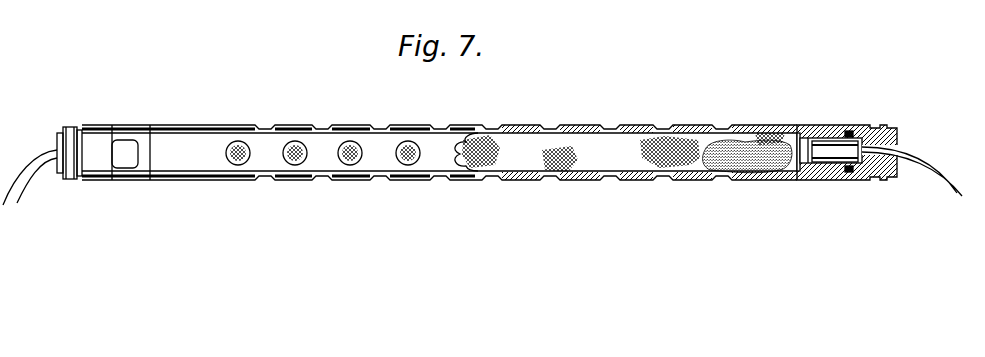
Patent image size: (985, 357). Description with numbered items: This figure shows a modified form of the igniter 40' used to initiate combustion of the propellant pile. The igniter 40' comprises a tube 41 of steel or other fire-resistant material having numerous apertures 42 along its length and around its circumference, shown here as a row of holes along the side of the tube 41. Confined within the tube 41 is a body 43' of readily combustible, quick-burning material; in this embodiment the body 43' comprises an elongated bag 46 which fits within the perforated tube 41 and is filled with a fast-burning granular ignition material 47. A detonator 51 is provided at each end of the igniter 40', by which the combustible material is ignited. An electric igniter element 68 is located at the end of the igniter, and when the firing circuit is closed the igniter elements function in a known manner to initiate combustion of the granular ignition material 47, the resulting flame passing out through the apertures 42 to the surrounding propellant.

The igniter 40' is at (439, 124).
The tube 41 is at (352, 125).
The apertures 42 is at (348, 166).
The body of combustible material 43' is at (747, 113).
The elongated bag 46 is at (628, 148).
The granular ignition material 47 is at (750, 173).
The detonator 51 is at (118, 123).
The electric igniter element 68 is at (828, 143).